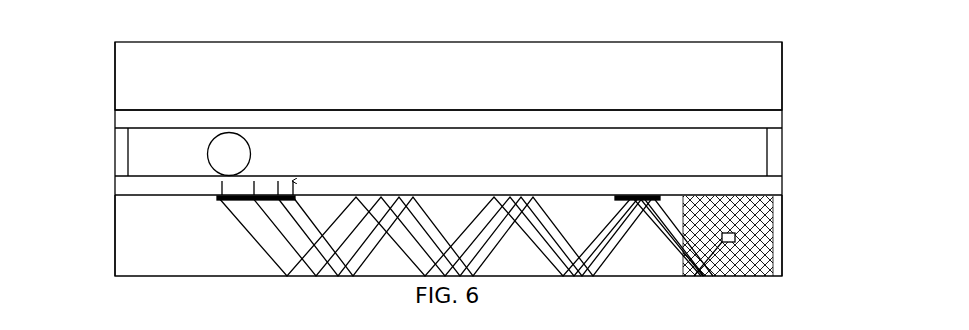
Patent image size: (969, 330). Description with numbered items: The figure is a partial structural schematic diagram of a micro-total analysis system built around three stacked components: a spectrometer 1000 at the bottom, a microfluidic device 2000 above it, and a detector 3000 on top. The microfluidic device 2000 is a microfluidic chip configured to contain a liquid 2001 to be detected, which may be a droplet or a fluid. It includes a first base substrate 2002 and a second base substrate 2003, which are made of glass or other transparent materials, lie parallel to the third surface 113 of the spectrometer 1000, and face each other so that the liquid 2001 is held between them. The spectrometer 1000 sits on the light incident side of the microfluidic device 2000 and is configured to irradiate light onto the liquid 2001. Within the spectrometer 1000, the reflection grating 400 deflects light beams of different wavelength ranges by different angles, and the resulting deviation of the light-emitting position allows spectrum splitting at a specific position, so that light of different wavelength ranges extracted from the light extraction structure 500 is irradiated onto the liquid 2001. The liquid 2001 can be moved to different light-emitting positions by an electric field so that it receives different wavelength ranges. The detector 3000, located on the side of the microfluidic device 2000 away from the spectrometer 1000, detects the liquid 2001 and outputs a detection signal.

The detector 3000 is at (782, 87).
The second base substrate 2003 is at (142, 121).
The microfluidic device 2000 is at (788, 112).
The liquid to be detected 2001 is at (242, 158).
The first base substrate 2002 is at (133, 188).
The third surface 113 is at (147, 196).
The light extraction structure 500 is at (217, 197).
The reflection grating 400 is at (622, 195).
The spectrometer 1000 is at (782, 237).